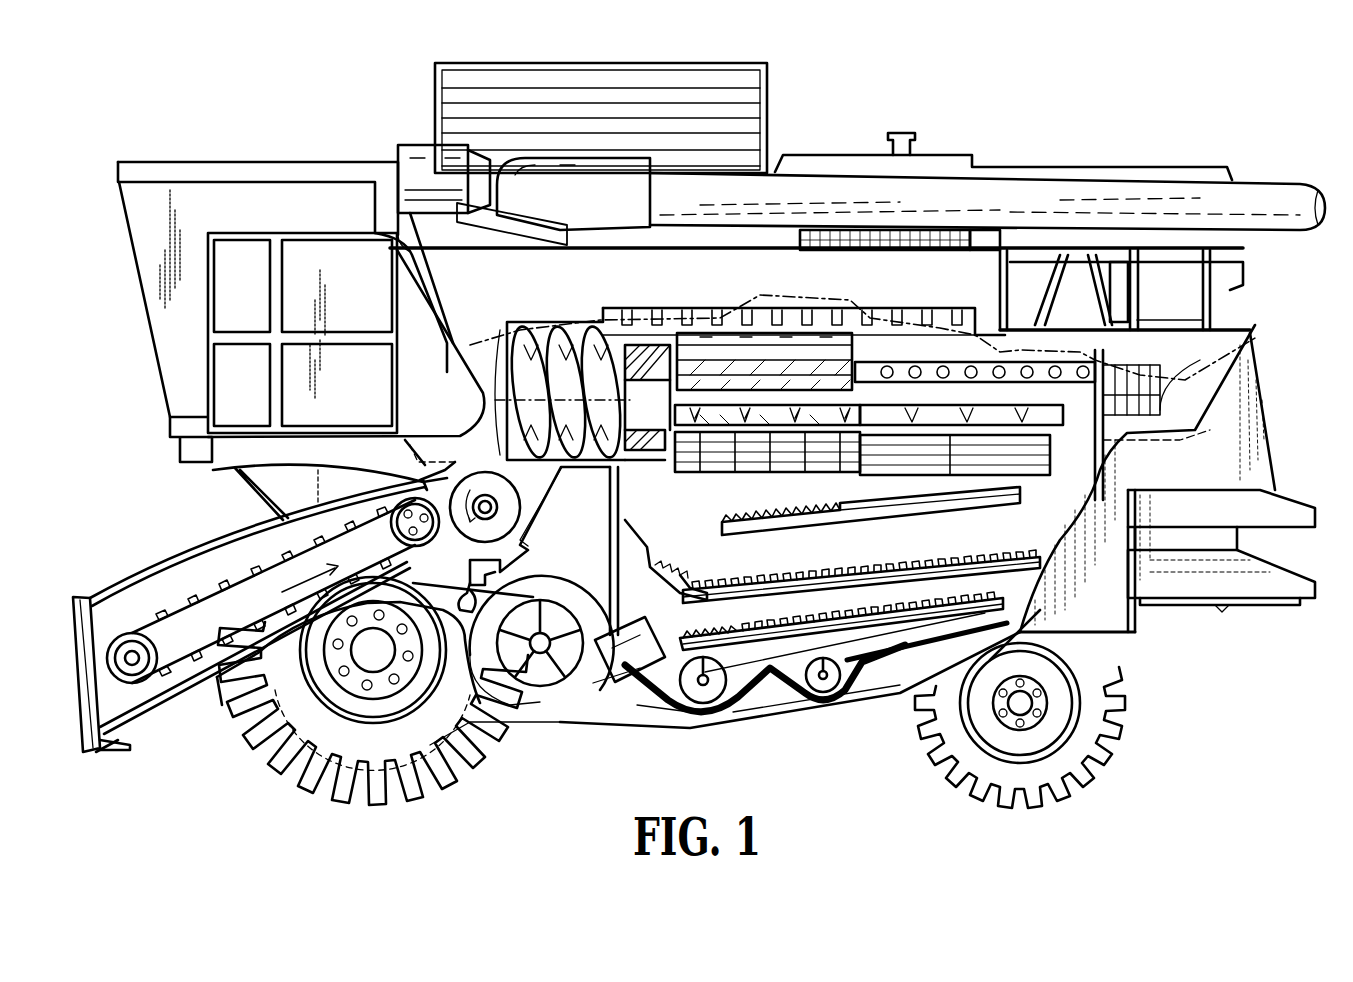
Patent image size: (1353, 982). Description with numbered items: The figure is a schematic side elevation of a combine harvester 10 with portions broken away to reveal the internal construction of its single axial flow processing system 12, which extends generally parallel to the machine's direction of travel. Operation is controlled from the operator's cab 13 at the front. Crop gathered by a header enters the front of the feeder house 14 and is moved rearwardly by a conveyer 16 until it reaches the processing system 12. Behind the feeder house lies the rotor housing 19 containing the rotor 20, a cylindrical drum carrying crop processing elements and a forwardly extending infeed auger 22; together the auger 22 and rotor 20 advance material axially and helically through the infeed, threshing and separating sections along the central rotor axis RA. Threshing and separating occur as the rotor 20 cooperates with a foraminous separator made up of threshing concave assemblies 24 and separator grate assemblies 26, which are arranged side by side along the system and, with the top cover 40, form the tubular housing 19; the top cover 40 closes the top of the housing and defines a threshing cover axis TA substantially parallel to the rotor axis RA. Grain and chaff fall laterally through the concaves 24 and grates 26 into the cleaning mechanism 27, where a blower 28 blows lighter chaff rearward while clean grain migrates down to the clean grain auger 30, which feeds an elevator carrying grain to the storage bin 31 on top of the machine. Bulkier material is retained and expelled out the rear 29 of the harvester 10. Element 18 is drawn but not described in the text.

The combine harvester 10 is at (848, 95).
The axial flow processing system 12 is at (867, 350).
The operator's cab 13 is at (152, 333).
The feeder house 14 is at (197, 543).
The conveyer 16 is at (227, 637).
The beater 18 is at (590, 475).
The rotor housing 19 is at (760, 309).
The rotor 20 is at (1020, 340).
The infeed auger 22 is at (583, 340).
The threshing concave assembly 24 is at (733, 473).
The separator grate assembly 26 is at (1040, 478).
The cleaning mechanism 27 is at (702, 556).
The blower 28 is at (580, 695).
The rear of the harvester 29 is at (1268, 607).
The clean grain auger 30 is at (703, 720).
The storage bin 31 is at (682, 63).
The top cover 40 is at (857, 307).
The rotor axis RA is at (642, 400).
The threshing cover axis TA is at (1160, 407).